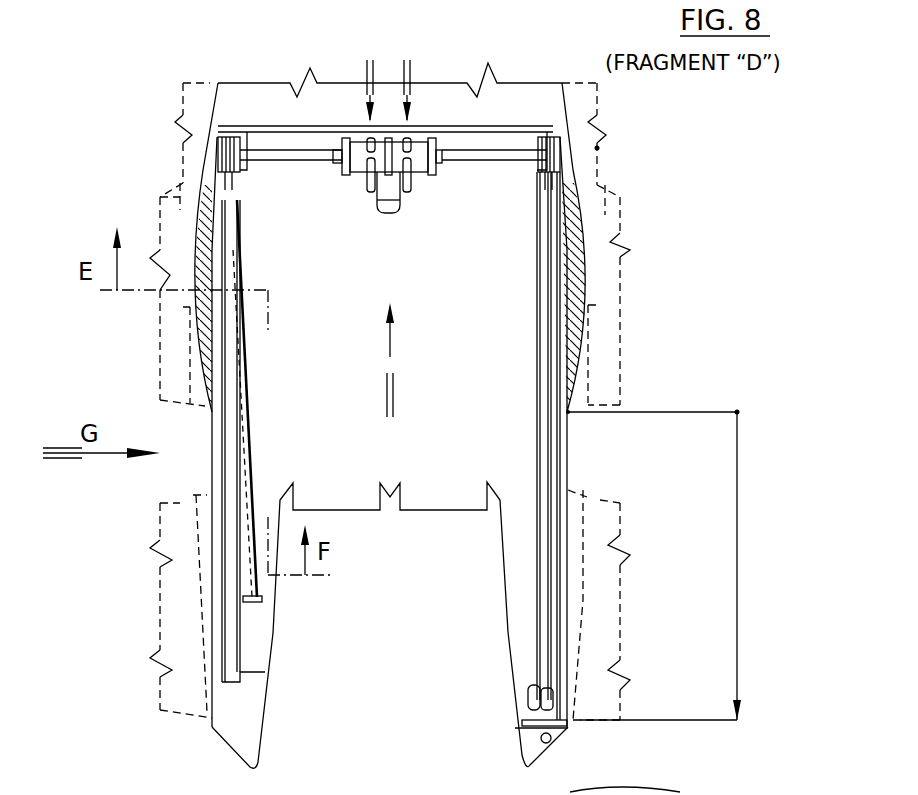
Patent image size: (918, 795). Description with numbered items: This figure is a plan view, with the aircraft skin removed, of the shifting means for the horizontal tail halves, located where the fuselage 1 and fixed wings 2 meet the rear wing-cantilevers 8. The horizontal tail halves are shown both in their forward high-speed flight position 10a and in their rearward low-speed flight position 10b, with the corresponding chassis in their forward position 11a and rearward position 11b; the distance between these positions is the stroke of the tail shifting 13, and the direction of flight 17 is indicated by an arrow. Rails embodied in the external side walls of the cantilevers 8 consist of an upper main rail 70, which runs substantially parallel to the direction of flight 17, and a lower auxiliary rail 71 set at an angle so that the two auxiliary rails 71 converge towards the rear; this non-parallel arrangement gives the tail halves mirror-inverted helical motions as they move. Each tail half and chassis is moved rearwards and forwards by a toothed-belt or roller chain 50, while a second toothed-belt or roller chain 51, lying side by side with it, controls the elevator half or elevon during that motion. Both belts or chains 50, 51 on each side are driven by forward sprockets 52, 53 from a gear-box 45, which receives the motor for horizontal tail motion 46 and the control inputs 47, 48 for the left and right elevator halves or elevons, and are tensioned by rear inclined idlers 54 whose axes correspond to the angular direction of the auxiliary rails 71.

The fuselage 1 is at (260, 83).
The fixed wings 2 is at (597, 148).
The rear wing-cantilevers 8 is at (505, 632).
The horizontal tail halves in forward high-speed flight position 10a is at (620, 257).
The tail halves in rearward low-speed flight position 10b is at (160, 652).
The chassis in forward high-speed flight position 11a is at (205, 265).
The chassis in rearward low-speed flight position 11b is at (200, 577).
The stroke of the tail shifting 13 is at (737, 583).
The direction of flight 17 is at (390, 357).
The gear-box 45 is at (420, 153).
The motor for horizontal tail motion 46 is at (397, 215).
The control input for the left elevator half or left elevon 47 is at (364, 88).
The control input for the right elevator half or right elevon 48 is at (414, 88).
The toothed-belts or roller chains for horizontal tail motions 50 is at (222, 170).
The toothed-belts or roller chains for elevator or elevon control 51 is at (228, 173).
The driving sprockets for horizontal tail motions 52 is at (183, 90).
The driving sprockets for elevator or elevon control 53 is at (243, 173).
The inclined idlers 54 is at (540, 702).
The main rail 70 is at (230, 448).
The auxiliary rail 71 is at (253, 468).